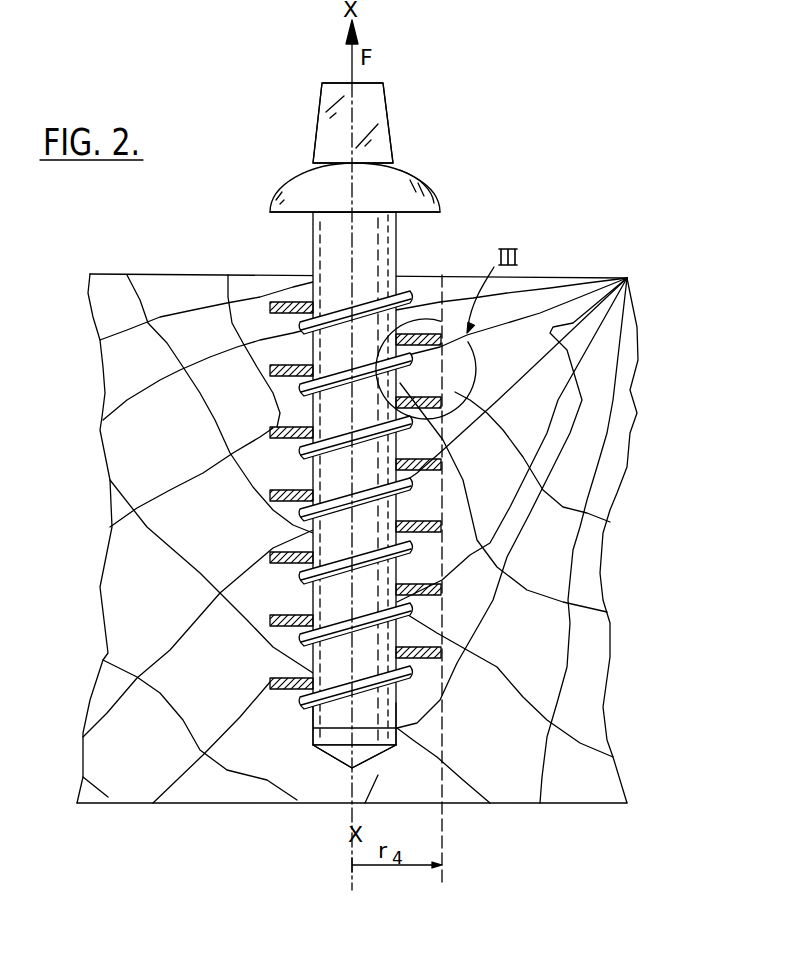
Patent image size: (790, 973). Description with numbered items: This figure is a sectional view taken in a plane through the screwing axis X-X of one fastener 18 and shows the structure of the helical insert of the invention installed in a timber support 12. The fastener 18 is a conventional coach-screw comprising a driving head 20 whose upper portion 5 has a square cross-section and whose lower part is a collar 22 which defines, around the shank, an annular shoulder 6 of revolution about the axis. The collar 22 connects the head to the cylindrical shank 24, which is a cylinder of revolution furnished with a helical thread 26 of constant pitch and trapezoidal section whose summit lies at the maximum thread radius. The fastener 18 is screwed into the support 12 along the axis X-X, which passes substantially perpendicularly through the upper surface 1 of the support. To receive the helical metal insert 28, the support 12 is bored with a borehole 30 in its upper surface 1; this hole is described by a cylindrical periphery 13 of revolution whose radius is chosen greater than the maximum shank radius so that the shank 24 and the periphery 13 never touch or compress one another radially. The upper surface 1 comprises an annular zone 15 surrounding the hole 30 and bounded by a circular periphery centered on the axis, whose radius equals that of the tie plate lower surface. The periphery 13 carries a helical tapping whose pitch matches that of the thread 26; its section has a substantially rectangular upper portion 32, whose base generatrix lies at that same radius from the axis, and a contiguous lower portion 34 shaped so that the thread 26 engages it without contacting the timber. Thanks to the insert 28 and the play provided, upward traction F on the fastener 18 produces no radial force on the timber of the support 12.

The upper surface 1 is at (624, 277).
The upper portion 5 is at (318, 97).
The annular shoulder 6 is at (273, 214).
The support 12 is at (597, 482).
The cylindrical periphery 13 is at (313, 727).
The annular zone 15 is at (313, 714).
The fastener 18 is at (388, 461).
The driving head 20 is at (377, 133).
The collar 22 is at (420, 190).
The shank 24 is at (372, 261).
The helical thread 26 is at (340, 313).
The helical metal insert 28 is at (270, 303).
The borehole 30 is at (317, 752).
The upper portion 32 is at (273, 682).
The lower portion 34 is at (303, 701).